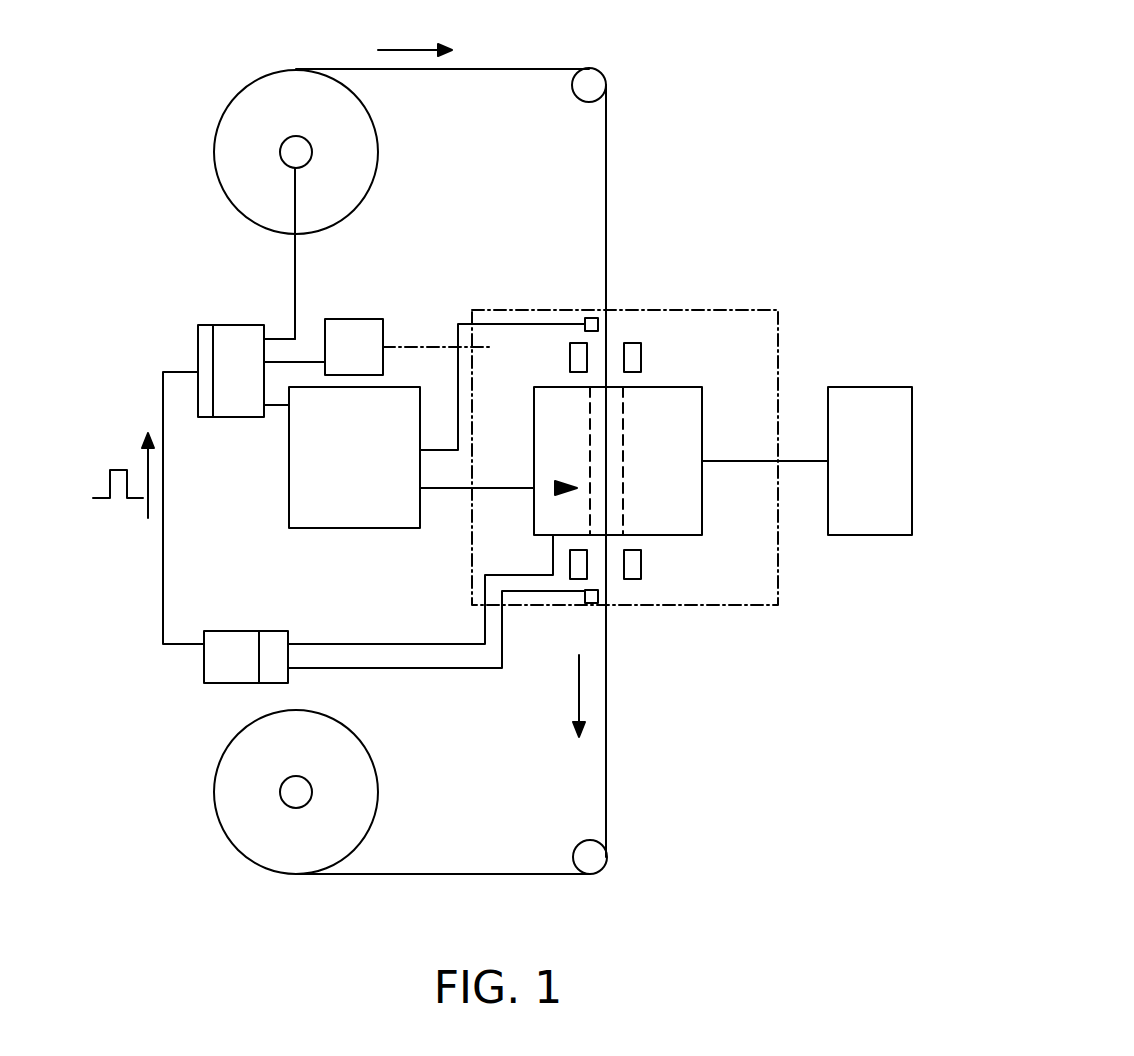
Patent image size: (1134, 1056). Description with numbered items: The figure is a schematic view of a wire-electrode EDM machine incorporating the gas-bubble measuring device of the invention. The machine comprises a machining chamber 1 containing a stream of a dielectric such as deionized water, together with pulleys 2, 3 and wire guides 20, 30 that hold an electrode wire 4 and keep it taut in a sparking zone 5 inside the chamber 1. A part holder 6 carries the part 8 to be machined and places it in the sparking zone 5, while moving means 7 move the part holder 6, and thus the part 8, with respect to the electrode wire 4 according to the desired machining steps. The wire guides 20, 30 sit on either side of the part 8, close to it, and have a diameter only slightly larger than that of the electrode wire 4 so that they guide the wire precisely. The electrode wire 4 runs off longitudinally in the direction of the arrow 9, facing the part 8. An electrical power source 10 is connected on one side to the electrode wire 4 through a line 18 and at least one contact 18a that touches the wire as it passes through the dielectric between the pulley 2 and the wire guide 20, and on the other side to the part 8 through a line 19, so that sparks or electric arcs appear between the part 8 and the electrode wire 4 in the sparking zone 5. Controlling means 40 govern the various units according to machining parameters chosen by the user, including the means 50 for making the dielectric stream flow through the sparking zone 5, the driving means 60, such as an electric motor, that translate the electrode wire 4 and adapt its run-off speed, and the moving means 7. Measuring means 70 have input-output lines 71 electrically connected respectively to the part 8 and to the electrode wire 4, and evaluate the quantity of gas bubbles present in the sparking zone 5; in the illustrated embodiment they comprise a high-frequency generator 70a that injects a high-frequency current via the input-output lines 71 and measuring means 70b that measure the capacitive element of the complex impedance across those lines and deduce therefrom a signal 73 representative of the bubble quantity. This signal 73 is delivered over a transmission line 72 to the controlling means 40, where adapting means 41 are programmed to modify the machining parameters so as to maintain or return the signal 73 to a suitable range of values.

The machining chamber 1 is at (687, 310).
The pulley 2 is at (590, 87).
The pulley 3 is at (590, 857).
The electrode wire 4 is at (606, 160).
The sparking zone 5 is at (555, 488).
The part holder 6 is at (808, 461).
The moving means 7 is at (902, 455).
The part to be machined 8 is at (685, 525).
The arrow 9 is at (578, 690).
The electrical power source 10 is at (289, 480).
The line 18 is at (458, 340).
The contact 18a is at (588, 318).
The line 19 is at (453, 495).
The wire guide 20 is at (642, 357).
The wire guide 30 is at (633, 572).
The controlling means 40 is at (237, 340).
The adapting means 41 is at (204, 342).
The means for making the stream of dielectric liquid flow 50 is at (377, 347).
The driving means 60 is at (293, 152).
The measuring means 70 is at (204, 668).
The high-frequency generator 70a is at (275, 643).
The measuring means 70b is at (228, 643).
The input-output lines 71 is at (398, 668).
The transmission line 72 is at (163, 580).
The signal 73 is at (118, 470).